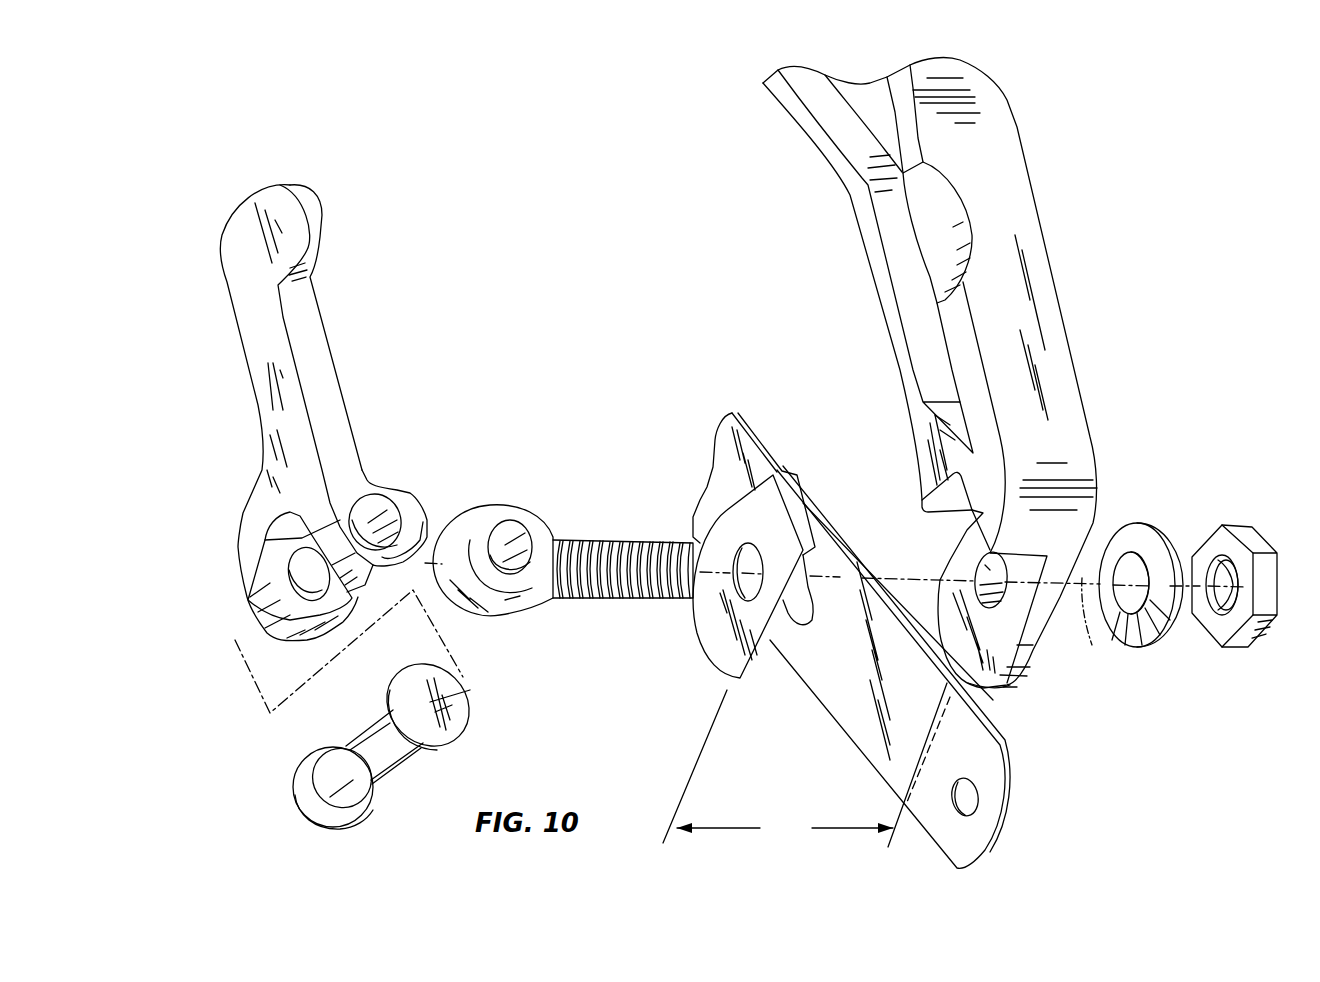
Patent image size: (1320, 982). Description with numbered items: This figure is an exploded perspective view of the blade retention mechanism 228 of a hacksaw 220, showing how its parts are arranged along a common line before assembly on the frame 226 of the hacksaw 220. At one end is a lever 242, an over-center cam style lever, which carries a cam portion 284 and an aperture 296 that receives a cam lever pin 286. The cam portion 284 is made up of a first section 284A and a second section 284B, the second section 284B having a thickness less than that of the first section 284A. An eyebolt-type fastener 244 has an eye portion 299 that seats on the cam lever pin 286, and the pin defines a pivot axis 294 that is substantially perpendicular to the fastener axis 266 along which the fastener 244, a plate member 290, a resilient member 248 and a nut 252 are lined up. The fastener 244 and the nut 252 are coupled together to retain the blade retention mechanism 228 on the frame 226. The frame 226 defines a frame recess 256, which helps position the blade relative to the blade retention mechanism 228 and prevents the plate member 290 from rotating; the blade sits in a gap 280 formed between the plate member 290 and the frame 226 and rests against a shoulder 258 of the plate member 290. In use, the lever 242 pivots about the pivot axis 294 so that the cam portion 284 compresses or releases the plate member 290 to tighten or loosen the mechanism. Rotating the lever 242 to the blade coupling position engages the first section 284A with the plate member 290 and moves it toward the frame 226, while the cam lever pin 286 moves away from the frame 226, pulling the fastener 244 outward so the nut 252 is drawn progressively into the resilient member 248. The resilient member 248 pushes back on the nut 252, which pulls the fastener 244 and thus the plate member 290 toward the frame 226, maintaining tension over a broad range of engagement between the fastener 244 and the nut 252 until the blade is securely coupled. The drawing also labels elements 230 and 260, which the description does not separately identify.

The hacksaw 220 is at (1045, 108).
The frame 226 is at (822, 200).
The blade retention mechanism 228 is at (532, 180).
The plate 230 is at (833, 732).
The lever 242 is at (240, 275).
The fastener 244 is at (558, 590).
The resilient member 248 is at (1132, 533).
The nut 252 is at (1242, 527).
The frame recess 256 is at (990, 687).
The shoulder 258 is at (840, 588).
The hole in bracket 260 is at (985, 567).
The fastener axis 266 is at (1095, 624).
The gap 280 is at (805, 765).
The cam portion 284 is at (393, 490).
The first section 284A is at (413, 497).
The second section 284B is at (428, 520).
The cam lever pin 286 is at (455, 697).
The plate member 290 is at (717, 648).
The pivot axis 294 is at (245, 633).
The aperture 296 is at (372, 505).
The eye portion 299 is at (513, 533).